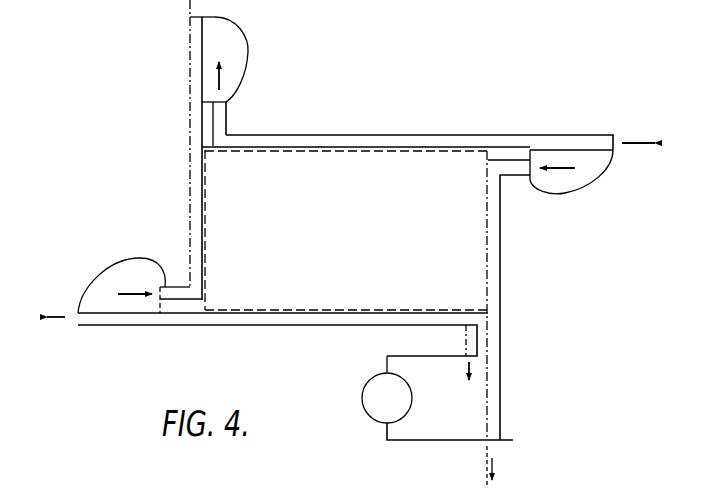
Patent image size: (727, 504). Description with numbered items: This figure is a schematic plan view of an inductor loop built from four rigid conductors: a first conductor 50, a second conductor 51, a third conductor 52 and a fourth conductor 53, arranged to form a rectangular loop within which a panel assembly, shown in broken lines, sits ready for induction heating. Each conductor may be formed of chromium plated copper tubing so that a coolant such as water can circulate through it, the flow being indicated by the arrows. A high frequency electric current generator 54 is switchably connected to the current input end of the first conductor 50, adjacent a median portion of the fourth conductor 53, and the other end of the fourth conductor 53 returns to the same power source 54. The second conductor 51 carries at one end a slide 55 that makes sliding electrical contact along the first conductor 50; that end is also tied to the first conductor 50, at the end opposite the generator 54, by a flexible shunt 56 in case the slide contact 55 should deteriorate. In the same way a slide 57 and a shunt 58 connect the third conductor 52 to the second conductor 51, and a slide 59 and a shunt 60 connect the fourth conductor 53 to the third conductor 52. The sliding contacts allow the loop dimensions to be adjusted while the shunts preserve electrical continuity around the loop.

The first conductor 50 is at (260, 325).
The second conductor 51 is at (193, 190).
The third conductor 52 is at (362, 136).
The fourth conductor 53 is at (495, 266).
The high frequency electric current generator 54 is at (372, 397).
The slide 55 is at (185, 307).
The flexible shunt 56 is at (135, 258).
The slide 57 is at (207, 127).
The shunt 58 is at (245, 33).
The slide 59 is at (502, 157).
The shunt 60 is at (560, 194).